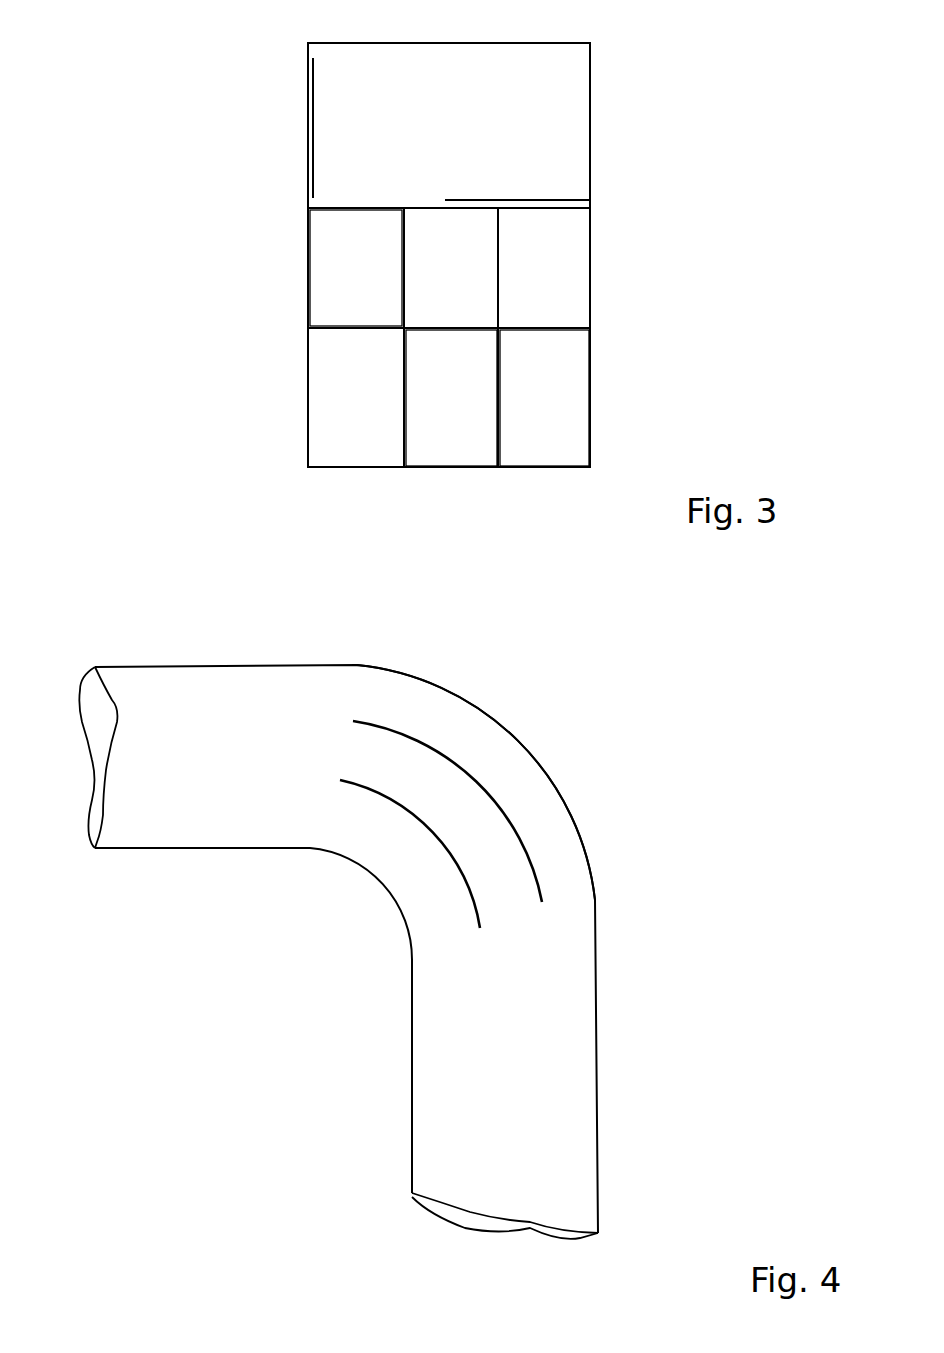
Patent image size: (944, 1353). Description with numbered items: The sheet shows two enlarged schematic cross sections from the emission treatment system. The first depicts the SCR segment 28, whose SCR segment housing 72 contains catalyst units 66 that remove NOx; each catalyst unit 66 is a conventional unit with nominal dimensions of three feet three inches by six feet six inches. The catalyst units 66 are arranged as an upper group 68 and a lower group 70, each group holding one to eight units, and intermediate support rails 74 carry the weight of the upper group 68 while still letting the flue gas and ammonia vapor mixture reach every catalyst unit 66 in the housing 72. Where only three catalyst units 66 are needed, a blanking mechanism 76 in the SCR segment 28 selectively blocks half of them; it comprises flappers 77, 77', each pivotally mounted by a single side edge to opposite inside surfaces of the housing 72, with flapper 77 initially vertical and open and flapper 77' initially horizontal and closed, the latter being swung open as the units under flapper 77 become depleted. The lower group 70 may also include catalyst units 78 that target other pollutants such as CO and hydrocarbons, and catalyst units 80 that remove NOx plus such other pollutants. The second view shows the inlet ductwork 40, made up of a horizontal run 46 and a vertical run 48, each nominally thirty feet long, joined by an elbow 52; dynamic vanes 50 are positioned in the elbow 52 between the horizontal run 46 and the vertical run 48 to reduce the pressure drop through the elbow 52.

In FIG. 3, the SCR segment 28 is at (236, 170).
In FIG. 3, the blanking mechanism 76 is at (614, 108).
In FIG. 3, the flapper 77 is at (344, 128).
In FIG. 3, the flapper 77' is at (517, 167).
In FIG. 3, the upper group of catalyst units 68 is at (598, 246).
In FIG. 3, the lower group of catalyst units 70 is at (596, 360).
In FIG. 3, the SCR segment housing 72 is at (308, 332).
In FIG. 3, the intermediate support rails 74 is at (592, 330).
In FIG. 3, the catalyst unit 66 is at (366, 290).
In FIG. 3, the catalyst unit targeting other pollutants 78 is at (470, 450).
In FIG. 3, the catalyst unit removing NOx plus other pollutants 80 is at (563, 445).
In FIG. 4, the inlet ductwork 40 is at (302, 994).
In FIG. 4, the horizontal run 46 is at (160, 855).
In FIG. 4, the vertical run 48 is at (406, 1129).
In FIG. 4, the dynamic vanes 50 is at (353, 720).
In FIG. 4, the elbow 52 is at (584, 742).